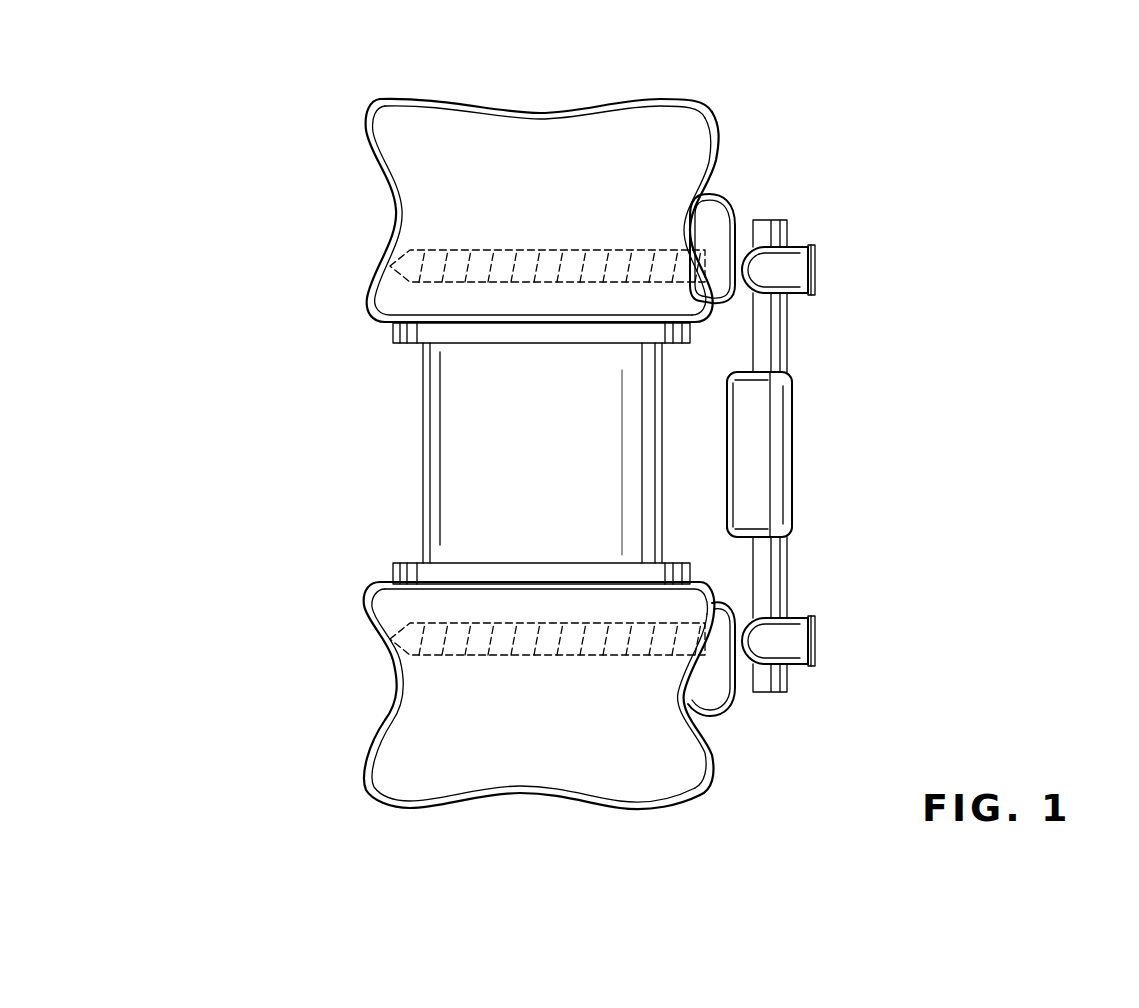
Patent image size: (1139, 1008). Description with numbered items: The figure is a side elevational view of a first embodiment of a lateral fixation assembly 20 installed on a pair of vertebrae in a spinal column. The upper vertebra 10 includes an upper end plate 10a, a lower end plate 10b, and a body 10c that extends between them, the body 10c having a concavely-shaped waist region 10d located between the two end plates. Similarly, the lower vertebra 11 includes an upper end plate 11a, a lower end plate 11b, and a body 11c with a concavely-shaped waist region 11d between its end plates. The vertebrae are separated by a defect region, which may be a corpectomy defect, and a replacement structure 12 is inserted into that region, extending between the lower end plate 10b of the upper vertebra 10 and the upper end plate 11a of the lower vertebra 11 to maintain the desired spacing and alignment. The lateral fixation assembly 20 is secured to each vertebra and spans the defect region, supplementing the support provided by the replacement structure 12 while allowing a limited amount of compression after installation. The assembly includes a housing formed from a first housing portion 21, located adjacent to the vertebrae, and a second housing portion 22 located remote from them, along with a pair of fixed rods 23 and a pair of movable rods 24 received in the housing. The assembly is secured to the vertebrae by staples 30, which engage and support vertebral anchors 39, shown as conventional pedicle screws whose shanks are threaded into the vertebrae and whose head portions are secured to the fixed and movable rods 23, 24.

The upper vertebra 10 is at (535, 229).
The upper end plate 10a is at (652, 98).
The lower end plate 10b is at (412, 335).
The body 10c is at (542, 214).
The concavely-shaped waist region 10d is at (707, 165).
The lower vertebra 11 is at (514, 676).
The upper end plate 11a is at (413, 578).
The lower end plate 11b is at (437, 810).
The body 11c is at (518, 746).
The concavely-shaped waist region 11d is at (710, 752).
The replacement structure 12 is at (533, 439).
The lateral fixation assembly 20 is at (829, 467).
The first housing portion 21 is at (740, 434).
The second housing portion 22 is at (783, 485).
The fixed rod 23 is at (780, 342).
The movable rod 24 is at (783, 572).
The staple 30 is at (744, 199).
The vertebral anchor 39 is at (849, 250).